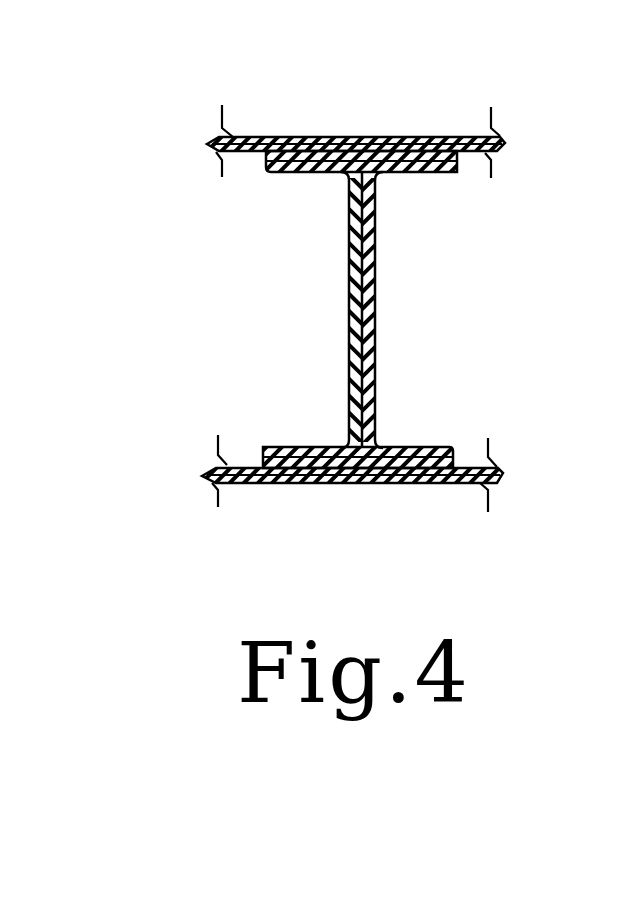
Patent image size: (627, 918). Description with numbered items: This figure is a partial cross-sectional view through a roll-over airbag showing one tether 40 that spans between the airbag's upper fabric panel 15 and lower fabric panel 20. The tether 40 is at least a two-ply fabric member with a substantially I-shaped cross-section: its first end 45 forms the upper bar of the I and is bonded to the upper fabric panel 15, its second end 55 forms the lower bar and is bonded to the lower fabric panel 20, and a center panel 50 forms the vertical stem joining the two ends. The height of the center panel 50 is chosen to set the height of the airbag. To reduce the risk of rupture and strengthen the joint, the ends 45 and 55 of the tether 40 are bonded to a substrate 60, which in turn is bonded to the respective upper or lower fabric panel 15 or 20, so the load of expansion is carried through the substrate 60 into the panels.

The upper fabric panel 15 is at (357, 137).
The lower fabric panel 20 is at (385, 483).
The tether 40 is at (378, 281).
The first end 45 is at (423, 172).
The center panel 50 is at (373, 356).
The second end 55 is at (412, 448).
The substrate 60 is at (265, 151).